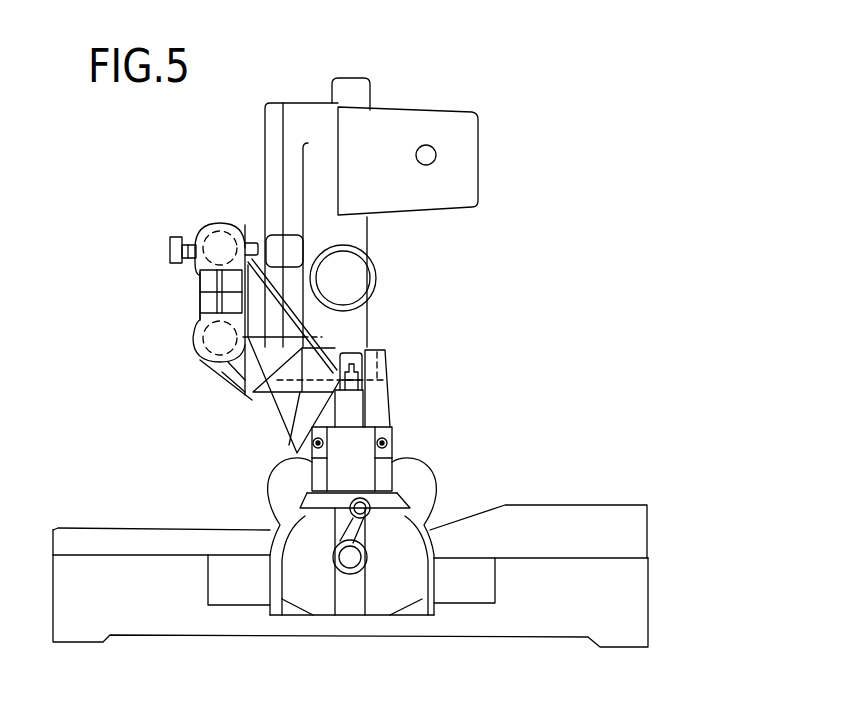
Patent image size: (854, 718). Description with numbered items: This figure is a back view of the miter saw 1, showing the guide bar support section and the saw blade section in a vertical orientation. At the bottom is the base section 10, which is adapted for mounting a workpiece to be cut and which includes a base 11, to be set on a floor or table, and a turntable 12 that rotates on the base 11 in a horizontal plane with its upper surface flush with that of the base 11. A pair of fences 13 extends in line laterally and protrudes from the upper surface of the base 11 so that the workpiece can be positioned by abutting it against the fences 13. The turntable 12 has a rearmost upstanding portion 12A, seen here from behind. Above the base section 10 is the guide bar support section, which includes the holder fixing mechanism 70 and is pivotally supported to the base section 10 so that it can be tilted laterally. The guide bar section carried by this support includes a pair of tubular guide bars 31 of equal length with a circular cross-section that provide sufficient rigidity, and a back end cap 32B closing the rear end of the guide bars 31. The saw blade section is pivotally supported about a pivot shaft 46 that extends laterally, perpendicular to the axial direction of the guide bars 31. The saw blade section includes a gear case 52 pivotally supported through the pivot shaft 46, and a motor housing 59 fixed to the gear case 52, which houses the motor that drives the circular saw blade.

The miter saw 1 is at (545, 130).
The base section 10 is at (532, 649).
The base 11 is at (650, 600).
The turntable 12 is at (462, 603).
The rearmost upstanding portion 12A is at (423, 480).
The fences 13 is at (108, 540).
The guide bars 31 is at (205, 235).
The back end cap 32B is at (195, 298).
The pivot shaft 46 is at (387, 348).
The gear case 52 is at (268, 168).
The motor housing 59 is at (435, 115).
The holder fixing mechanism 70 is at (400, 447).